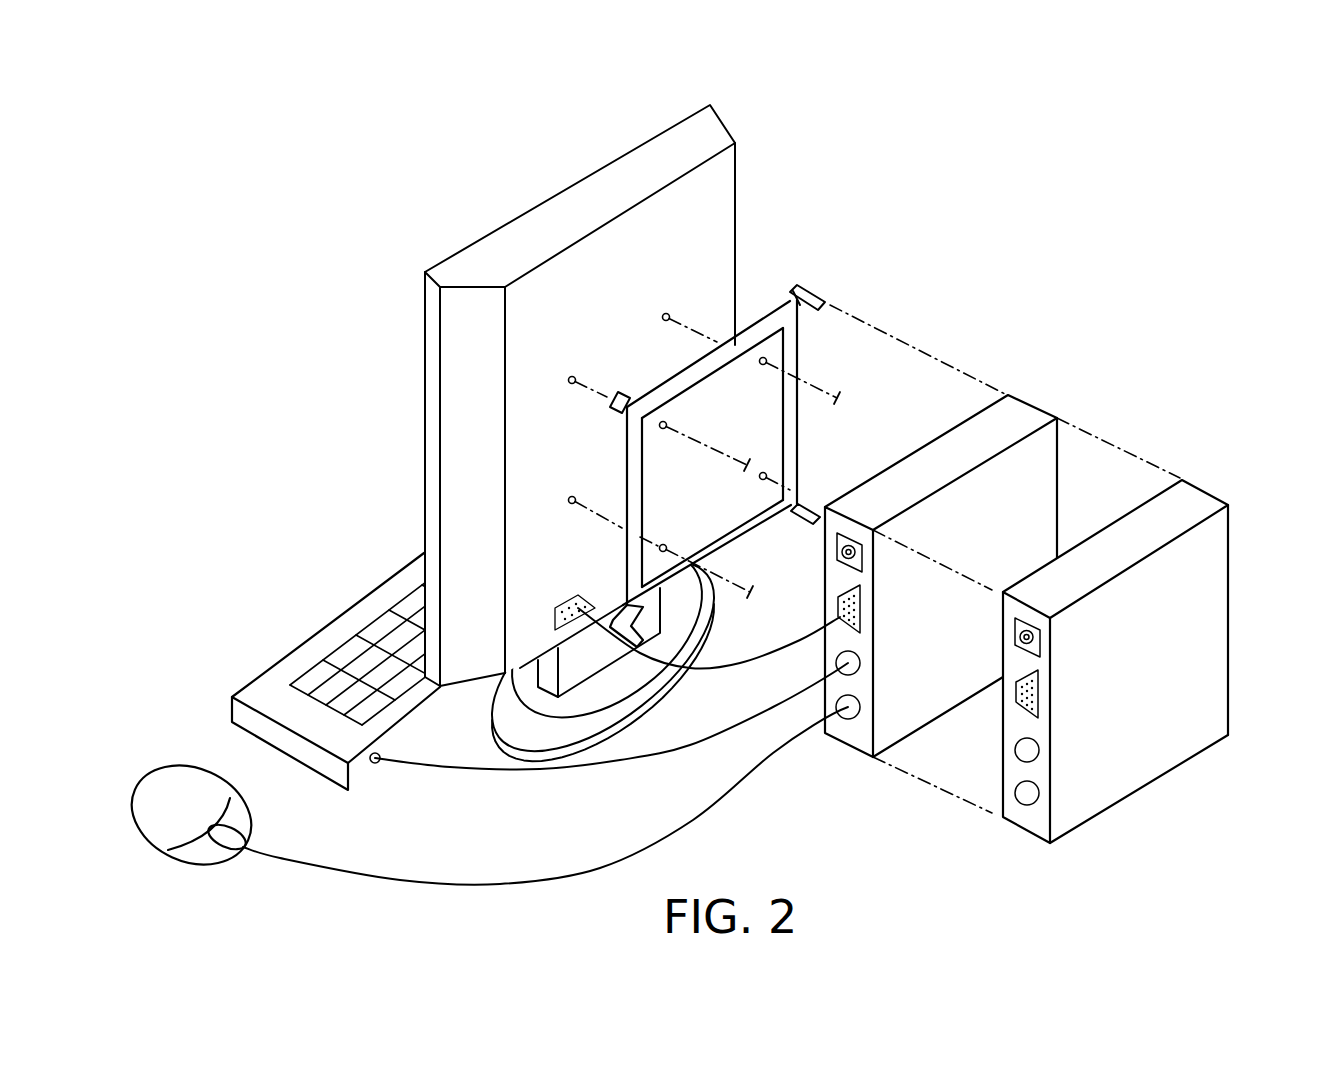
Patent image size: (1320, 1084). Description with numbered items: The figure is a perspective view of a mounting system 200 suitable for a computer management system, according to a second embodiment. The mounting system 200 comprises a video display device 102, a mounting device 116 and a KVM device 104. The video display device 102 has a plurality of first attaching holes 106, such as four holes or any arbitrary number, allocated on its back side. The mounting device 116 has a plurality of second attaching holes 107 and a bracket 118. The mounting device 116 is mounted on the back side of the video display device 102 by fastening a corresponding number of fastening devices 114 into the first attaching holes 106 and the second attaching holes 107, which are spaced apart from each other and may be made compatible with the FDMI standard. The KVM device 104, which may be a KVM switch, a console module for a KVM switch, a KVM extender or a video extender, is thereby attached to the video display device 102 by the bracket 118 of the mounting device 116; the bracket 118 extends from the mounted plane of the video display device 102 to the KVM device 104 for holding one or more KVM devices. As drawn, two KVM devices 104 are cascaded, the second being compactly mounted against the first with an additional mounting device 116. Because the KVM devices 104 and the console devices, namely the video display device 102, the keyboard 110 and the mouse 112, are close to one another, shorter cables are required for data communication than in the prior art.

The mounting system 200 is at (1229, 158).
The video display device 102 is at (683, 163).
The KVM device 104 is at (1003, 423).
The first attaching holes 106 is at (668, 312).
The second attaching holes 107 is at (766, 358).
The keyboard 110 is at (262, 695).
The mouse 112 is at (190, 770).
The fastening devices 114 is at (840, 391).
The mounting device 116 is at (761, 306).
The bracket 118 is at (808, 289).